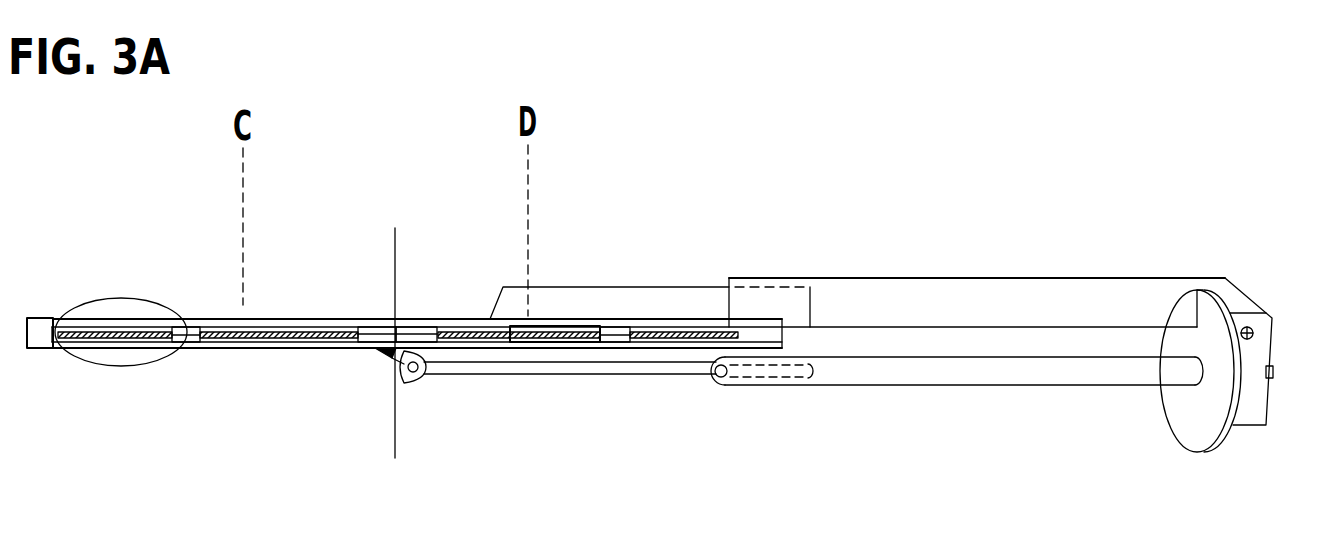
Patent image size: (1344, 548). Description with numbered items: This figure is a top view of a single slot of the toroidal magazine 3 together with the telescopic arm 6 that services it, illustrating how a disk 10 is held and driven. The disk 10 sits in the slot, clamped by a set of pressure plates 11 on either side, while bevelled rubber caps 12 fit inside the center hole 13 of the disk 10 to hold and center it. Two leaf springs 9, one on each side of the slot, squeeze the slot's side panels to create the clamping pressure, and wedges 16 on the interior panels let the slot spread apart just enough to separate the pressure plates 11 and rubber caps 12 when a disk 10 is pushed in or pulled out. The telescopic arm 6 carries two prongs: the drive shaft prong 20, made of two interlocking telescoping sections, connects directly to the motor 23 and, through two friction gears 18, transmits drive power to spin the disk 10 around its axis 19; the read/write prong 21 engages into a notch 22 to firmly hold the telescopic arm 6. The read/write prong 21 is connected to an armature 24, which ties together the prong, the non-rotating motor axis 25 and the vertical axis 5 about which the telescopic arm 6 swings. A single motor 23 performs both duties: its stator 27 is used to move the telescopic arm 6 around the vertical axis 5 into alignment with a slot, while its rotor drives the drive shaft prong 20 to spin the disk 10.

The toroidal magazine 3 is at (27, 337).
The vertical axis 5 is at (1252, 328).
The telescopic arm 6 is at (998, 370).
The leaf springs 9 is at (132, 365).
The disk 10 is at (700, 340).
The pressure plates 11 is at (322, 332).
The bevelled rubber caps 12 is at (385, 333).
The center hole 13 is at (422, 333).
The wedges 16 is at (188, 340).
The friction gears 18 is at (400, 368).
The disk axis 19 is at (396, 258).
The drive shaft prong 20 is at (822, 378).
The read/write prong 21 is at (628, 303).
The notch 22 is at (543, 327).
The motor 23 is at (1252, 356).
The armature 24 is at (1233, 302).
The motor axis 25 is at (1274, 369).
The stator 27 is at (1245, 425).